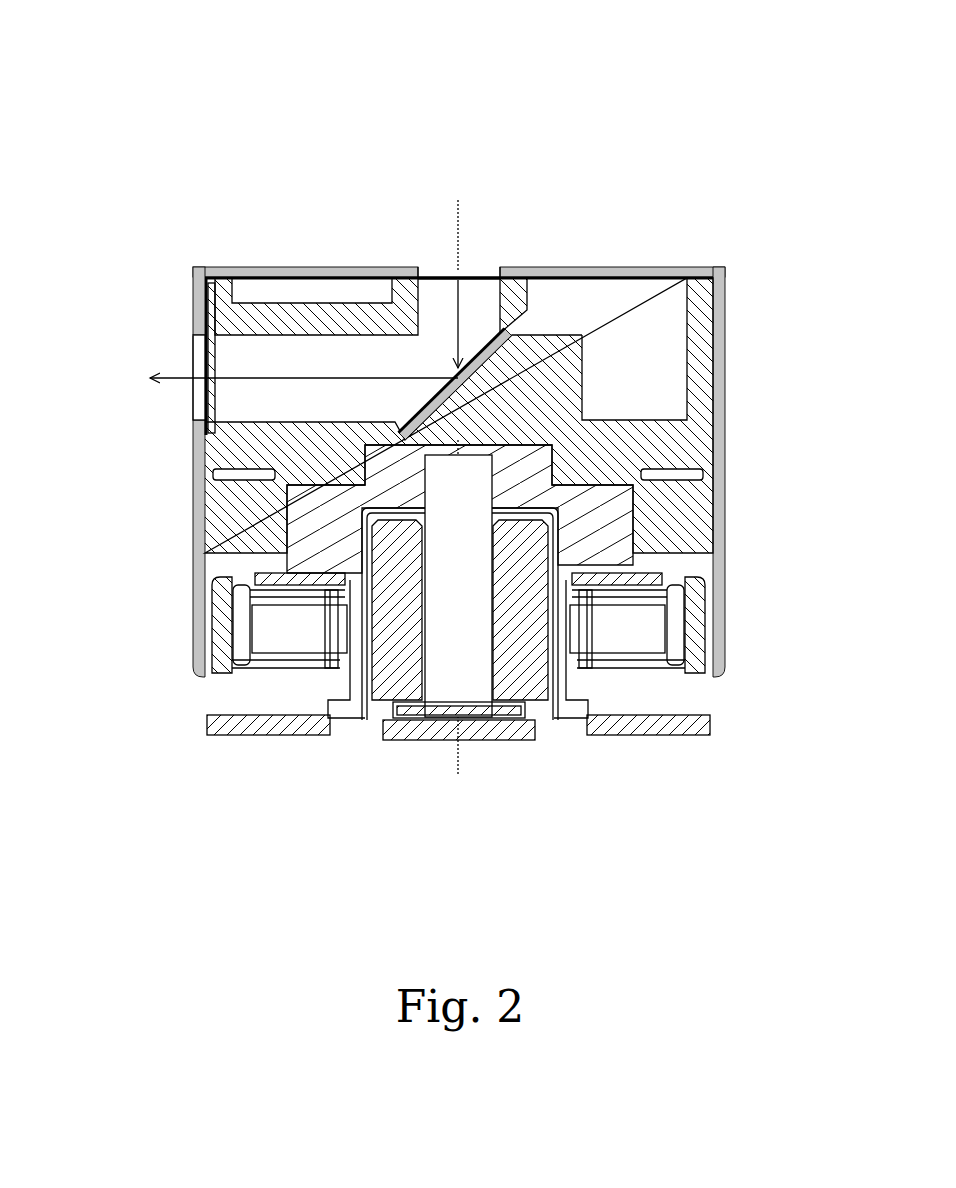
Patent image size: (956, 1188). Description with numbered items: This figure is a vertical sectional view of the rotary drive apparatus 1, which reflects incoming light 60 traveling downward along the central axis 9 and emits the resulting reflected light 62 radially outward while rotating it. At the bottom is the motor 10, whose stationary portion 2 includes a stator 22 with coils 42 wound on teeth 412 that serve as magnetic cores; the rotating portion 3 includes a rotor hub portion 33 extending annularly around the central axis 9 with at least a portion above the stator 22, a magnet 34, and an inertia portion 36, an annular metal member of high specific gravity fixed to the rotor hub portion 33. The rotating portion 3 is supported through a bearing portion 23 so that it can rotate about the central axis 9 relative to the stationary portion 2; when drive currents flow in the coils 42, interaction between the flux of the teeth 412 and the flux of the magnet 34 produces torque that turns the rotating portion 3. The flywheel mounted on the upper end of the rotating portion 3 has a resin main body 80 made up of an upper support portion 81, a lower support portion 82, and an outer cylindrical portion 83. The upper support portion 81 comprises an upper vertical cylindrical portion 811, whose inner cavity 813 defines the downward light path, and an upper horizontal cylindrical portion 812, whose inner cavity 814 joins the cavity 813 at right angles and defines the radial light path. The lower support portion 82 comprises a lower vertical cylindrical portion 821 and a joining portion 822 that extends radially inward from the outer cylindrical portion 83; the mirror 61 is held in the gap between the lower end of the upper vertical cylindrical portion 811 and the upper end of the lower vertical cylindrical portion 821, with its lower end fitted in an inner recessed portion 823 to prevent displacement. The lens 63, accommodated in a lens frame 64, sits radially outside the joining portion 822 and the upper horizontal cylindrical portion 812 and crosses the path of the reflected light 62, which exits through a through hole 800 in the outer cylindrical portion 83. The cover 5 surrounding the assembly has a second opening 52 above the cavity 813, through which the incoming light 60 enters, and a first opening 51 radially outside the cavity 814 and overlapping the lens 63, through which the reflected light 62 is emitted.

The rotary drive apparatus 1 is at (341, 110).
The stationary portion 2 is at (378, 750).
The rotating portion 3 is at (176, 592).
The cover 5 is at (720, 325).
The central axis 9 is at (458, 215).
The motor 10 is at (746, 651).
The stator 22 is at (630, 690).
The bearing portion 23 is at (501, 718).
The rotor hub portion 33 is at (522, 495).
The magnet 34 is at (678, 645).
The inertia portion 36 is at (200, 672).
The coils 42 is at (287, 597).
The first opening 51 is at (192, 340).
The second opening 52 is at (488, 266).
The incoming light 60 is at (452, 290).
The mirror 61 is at (512, 335).
The reflected light 62 is at (261, 378).
The lens 63 is at (191, 355).
The lens frame 64 is at (207, 300).
The main body 80 is at (744, 412).
The upper support portion 81 is at (245, 162).
The lower support portion 82 is at (427, 340).
The outer cylindrical portion 83 is at (698, 297).
The through hole 800 is at (203, 395).
The upper vertical cylindrical portion 811 is at (403, 297).
The upper horizontal cylindrical portion 812 is at (327, 320).
The cavity 813 is at (500, 320).
The cavity 814 is at (205, 470).
The lower vertical cylindrical portion 821 is at (548, 360).
The joining portion 822 is at (327, 447).
The inner recessed portion 823 is at (625, 335).
The teeth 412 is at (303, 645).